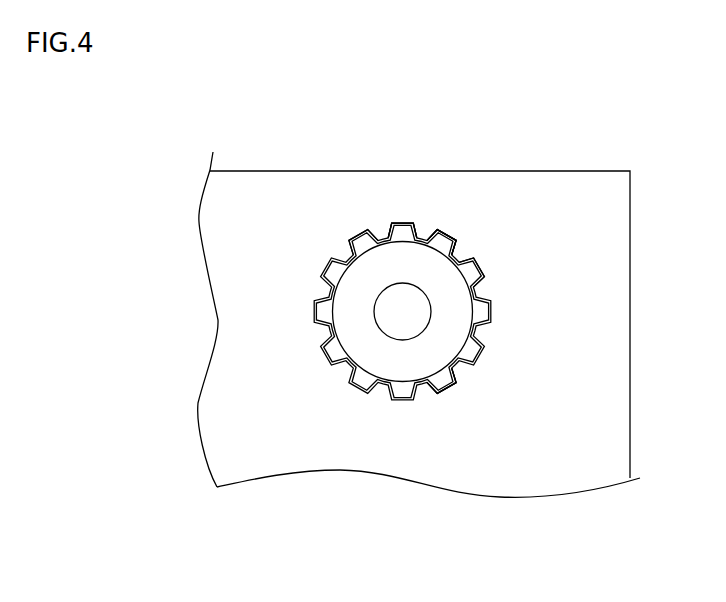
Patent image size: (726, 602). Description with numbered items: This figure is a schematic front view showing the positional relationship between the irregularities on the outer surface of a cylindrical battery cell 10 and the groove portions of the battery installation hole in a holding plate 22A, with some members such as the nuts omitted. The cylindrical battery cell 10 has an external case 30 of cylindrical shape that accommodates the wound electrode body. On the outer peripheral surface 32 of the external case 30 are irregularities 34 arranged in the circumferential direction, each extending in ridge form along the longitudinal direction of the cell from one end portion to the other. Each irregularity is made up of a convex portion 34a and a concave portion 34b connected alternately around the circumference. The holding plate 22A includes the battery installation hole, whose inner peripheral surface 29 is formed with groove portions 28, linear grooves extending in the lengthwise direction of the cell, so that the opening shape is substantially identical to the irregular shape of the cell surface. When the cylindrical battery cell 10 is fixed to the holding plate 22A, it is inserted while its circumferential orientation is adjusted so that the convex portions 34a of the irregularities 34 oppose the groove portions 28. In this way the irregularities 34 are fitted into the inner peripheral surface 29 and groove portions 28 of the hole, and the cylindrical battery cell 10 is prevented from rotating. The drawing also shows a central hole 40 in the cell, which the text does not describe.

The cylindrical battery cell 10 is at (351, 340).
The holding plate 22A is at (584, 169).
The groove portion 28 is at (482, 273).
The inner peripheral surface 29 is at (382, 248).
The external case 30 is at (442, 388).
The outer peripheral surface 32 is at (441, 380).
The irregularities 34 is at (483, 104).
The convex portion 34a is at (450, 237).
The concave portion 34b is at (423, 234).
The shaft hole 40 is at (398, 322).